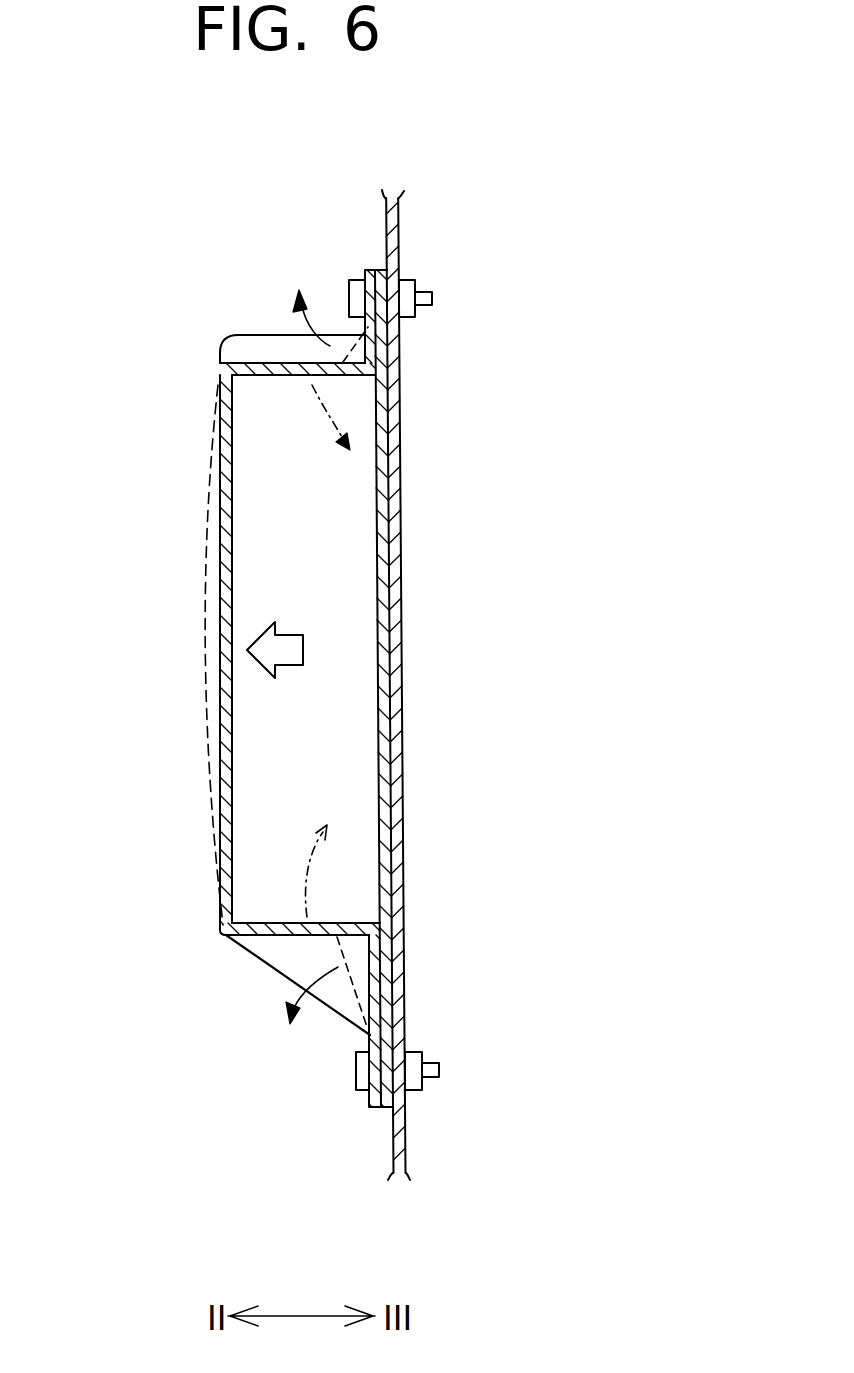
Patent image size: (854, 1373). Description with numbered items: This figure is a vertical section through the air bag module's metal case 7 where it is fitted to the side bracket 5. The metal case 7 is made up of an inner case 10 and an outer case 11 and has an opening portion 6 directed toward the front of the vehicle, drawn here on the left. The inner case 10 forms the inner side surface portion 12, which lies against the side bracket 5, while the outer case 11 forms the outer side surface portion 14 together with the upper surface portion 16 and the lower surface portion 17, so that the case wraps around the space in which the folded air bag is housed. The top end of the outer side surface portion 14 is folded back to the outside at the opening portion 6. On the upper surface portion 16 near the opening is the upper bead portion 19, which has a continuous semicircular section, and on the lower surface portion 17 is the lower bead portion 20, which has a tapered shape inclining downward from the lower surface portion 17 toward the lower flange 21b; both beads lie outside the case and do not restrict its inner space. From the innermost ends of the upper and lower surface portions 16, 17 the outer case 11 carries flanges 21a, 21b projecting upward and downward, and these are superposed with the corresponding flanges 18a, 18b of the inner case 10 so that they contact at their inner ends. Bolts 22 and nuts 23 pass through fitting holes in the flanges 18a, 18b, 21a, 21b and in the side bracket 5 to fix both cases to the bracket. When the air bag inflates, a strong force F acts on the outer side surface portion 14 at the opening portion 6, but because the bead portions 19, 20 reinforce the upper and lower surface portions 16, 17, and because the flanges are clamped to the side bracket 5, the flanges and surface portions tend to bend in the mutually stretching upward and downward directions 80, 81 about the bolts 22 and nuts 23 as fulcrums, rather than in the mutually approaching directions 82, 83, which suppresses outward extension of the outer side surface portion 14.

The side bracket 5 is at (402, 222).
The opening portion 6 is at (290, 783).
The metal case 7 is at (214, 652).
The inner case 10 is at (376, 502).
The outer case 11 is at (222, 465).
The inner side surface portion 12 is at (383, 653).
The outer side surface portion 14 is at (218, 582).
The upper surface portion 16 is at (233, 392).
The lower surface portion 17 is at (227, 903).
The upper flange 18a is at (383, 268).
The lower flange 18b is at (387, 1108).
The upper bead portion 19 is at (247, 335).
The lower bead portion 20 is at (267, 963).
The upper flange 21a is at (367, 270).
The lower flange 21b is at (373, 1104).
The bolts 22 is at (349, 285).
The nuts 23 is at (412, 282).
The upward bending direction 80 is at (298, 322).
The downward bending direction 81 is at (303, 975).
The mutually approaching direction 82 is at (333, 433).
The mutually approaching direction 83 is at (313, 853).
The force F is at (262, 666).